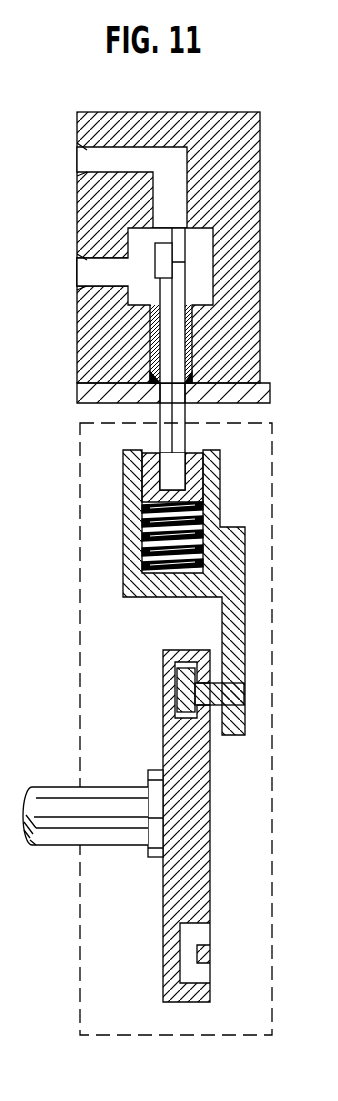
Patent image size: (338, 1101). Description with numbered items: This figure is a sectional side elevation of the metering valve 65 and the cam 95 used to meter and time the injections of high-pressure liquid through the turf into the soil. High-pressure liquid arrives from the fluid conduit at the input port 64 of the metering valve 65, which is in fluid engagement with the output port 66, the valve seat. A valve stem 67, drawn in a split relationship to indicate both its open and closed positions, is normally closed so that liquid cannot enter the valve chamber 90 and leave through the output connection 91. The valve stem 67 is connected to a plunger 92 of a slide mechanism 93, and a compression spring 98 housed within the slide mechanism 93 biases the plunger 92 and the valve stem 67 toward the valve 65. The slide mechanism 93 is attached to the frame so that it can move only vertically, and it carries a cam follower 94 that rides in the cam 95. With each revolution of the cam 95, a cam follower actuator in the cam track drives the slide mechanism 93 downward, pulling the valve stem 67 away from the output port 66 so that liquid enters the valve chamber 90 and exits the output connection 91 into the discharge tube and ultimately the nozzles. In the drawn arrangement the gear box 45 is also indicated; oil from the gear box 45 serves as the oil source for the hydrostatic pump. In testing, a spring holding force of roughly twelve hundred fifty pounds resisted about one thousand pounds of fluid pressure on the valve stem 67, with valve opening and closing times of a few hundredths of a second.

The gear box 45 is at (275, 470).
The input port 64 is at (84, 161).
The metering valve 65 is at (173, 114).
The output port 66 is at (178, 232).
The valve stem 67 is at (179, 282).
The valve chamber 90 is at (203, 293).
The output connection 91 is at (82, 269).
The plunger 92 is at (168, 479).
The slide mechanism 93 is at (243, 566).
The cam follower 94 is at (187, 693).
The cam 95 is at (209, 846).
The compression spring 98 is at (143, 528).